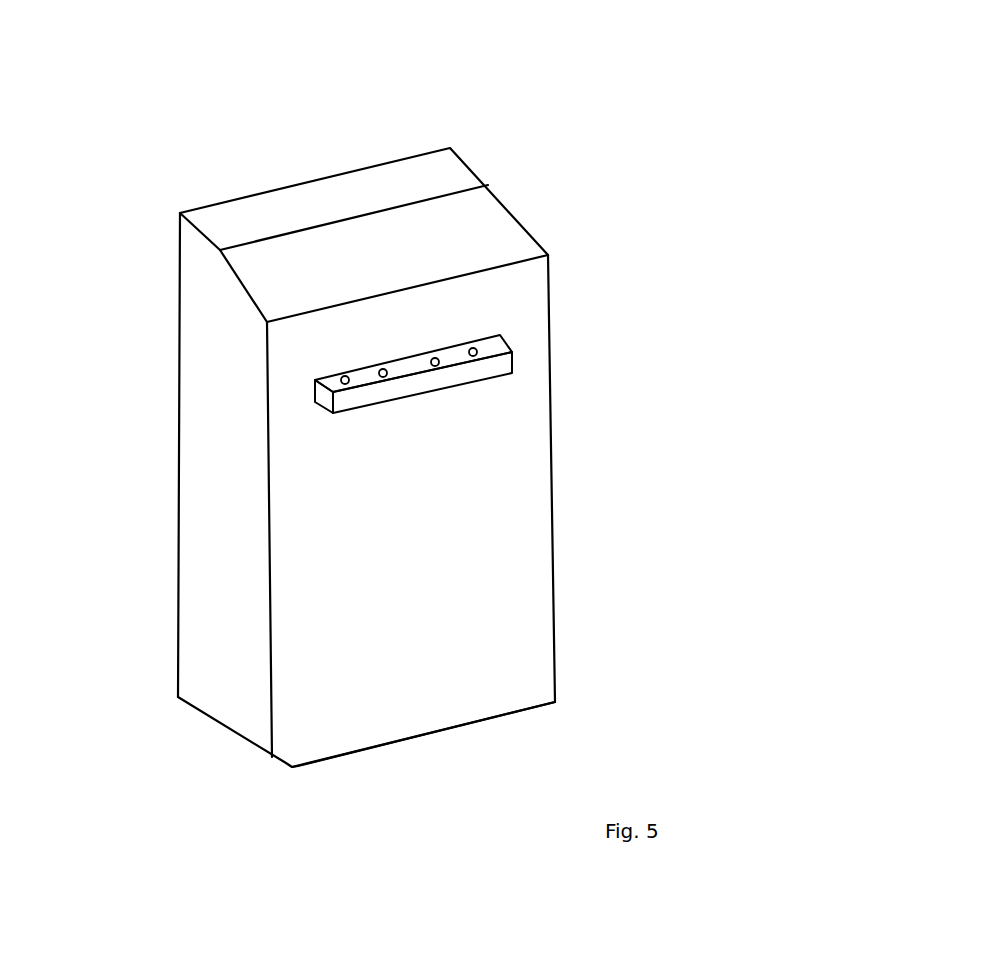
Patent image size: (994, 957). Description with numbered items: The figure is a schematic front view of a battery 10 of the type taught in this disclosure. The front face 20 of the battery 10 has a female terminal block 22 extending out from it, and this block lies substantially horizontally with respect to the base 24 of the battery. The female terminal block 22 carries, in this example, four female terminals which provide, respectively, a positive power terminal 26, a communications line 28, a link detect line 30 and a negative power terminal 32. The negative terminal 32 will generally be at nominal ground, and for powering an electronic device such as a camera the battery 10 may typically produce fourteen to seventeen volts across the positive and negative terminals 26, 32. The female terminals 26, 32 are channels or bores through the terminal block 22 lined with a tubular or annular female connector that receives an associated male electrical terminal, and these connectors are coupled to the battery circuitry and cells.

The battery 10 is at (617, 95).
The front face 20 is at (297, 578).
The female terminal block 22 is at (512, 373).
The base 24 is at (320, 762).
The positive power terminal 26 is at (341, 381).
The communications line 28 is at (383, 369).
The link detect line 30 is at (436, 358).
The negative power terminal 32 is at (478, 350).